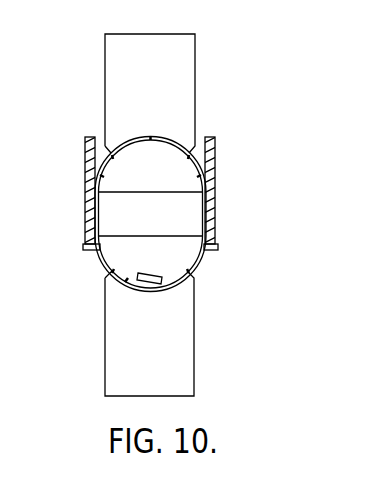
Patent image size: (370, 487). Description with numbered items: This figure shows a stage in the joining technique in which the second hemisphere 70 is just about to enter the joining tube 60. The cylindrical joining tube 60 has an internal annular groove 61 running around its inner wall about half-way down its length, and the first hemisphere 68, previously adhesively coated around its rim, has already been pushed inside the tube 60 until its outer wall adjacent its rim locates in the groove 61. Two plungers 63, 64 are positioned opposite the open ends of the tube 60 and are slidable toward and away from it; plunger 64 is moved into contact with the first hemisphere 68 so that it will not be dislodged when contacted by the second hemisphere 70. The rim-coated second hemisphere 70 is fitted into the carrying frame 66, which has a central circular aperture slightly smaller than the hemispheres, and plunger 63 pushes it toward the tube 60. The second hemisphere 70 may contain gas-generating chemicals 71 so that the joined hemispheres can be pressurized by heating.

The joining tube 60 is at (214, 212).
The internal annular groove 61 is at (90, 207).
The plunger 63 is at (184, 341).
The plunger 64 is at (190, 82).
The frame 66 is at (96, 257).
The first hemisphere 68 is at (199, 140).
The second hemisphere 70 is at (196, 268).
The gas-generating chemicals 71 is at (143, 286).